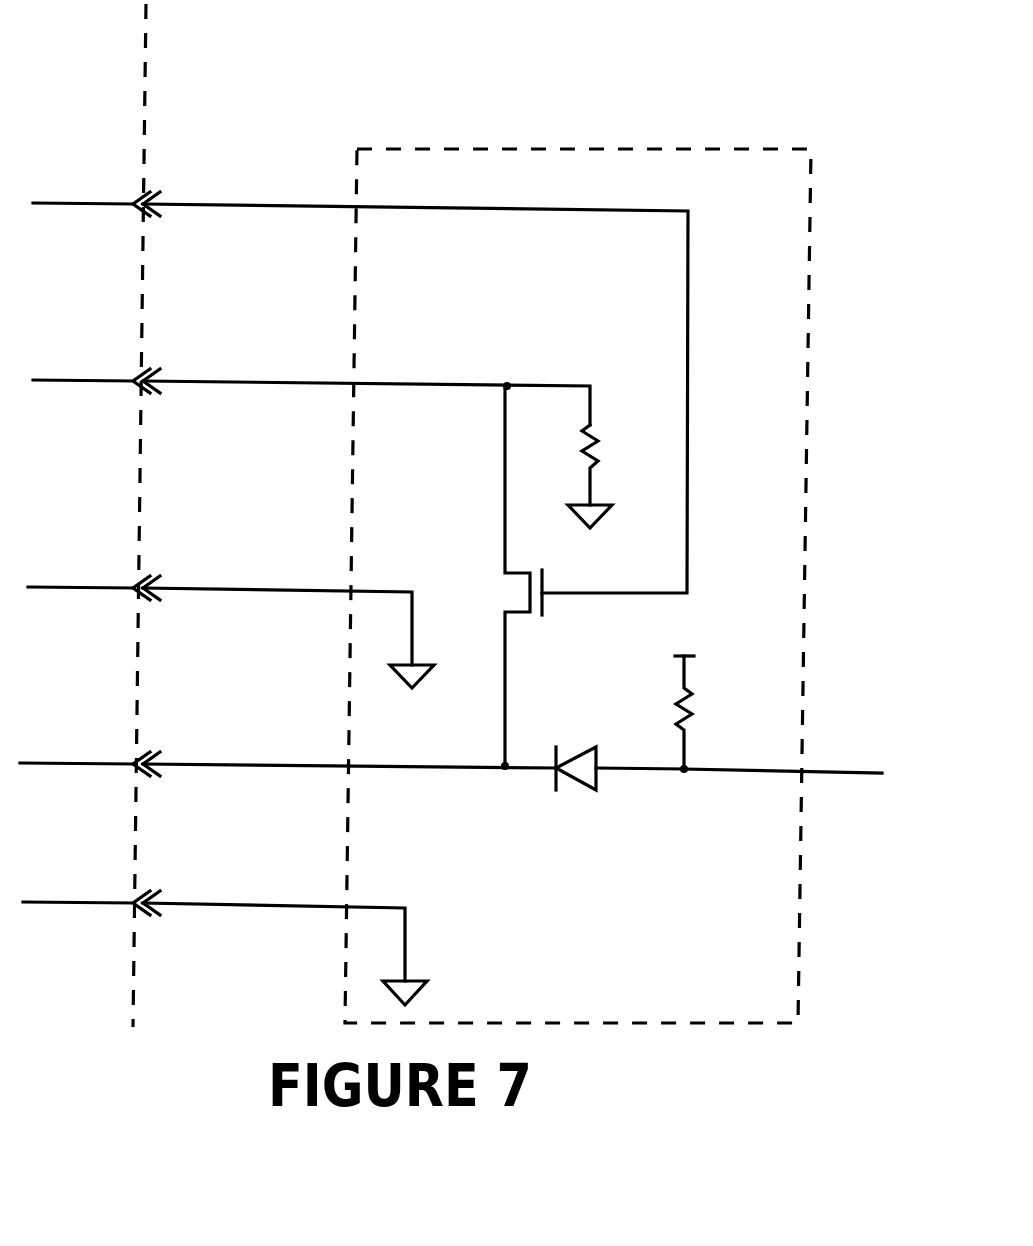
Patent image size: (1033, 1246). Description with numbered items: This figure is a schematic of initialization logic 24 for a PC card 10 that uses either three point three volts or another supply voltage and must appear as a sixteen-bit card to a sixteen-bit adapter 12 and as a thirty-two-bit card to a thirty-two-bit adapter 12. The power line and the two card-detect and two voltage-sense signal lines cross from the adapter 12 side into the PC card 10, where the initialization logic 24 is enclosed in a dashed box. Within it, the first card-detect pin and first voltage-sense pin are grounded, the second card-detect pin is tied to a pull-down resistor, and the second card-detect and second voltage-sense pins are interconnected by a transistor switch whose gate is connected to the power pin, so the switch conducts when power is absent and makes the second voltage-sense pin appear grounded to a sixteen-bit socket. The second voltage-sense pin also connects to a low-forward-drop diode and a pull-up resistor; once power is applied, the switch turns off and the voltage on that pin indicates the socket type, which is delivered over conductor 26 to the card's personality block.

The PCMCIA adapter 12 is at (80, 45).
The PC card 10 is at (409, 45).
The initialization logic 24 is at (767, 150).
The conductor 26 is at (835, 772).